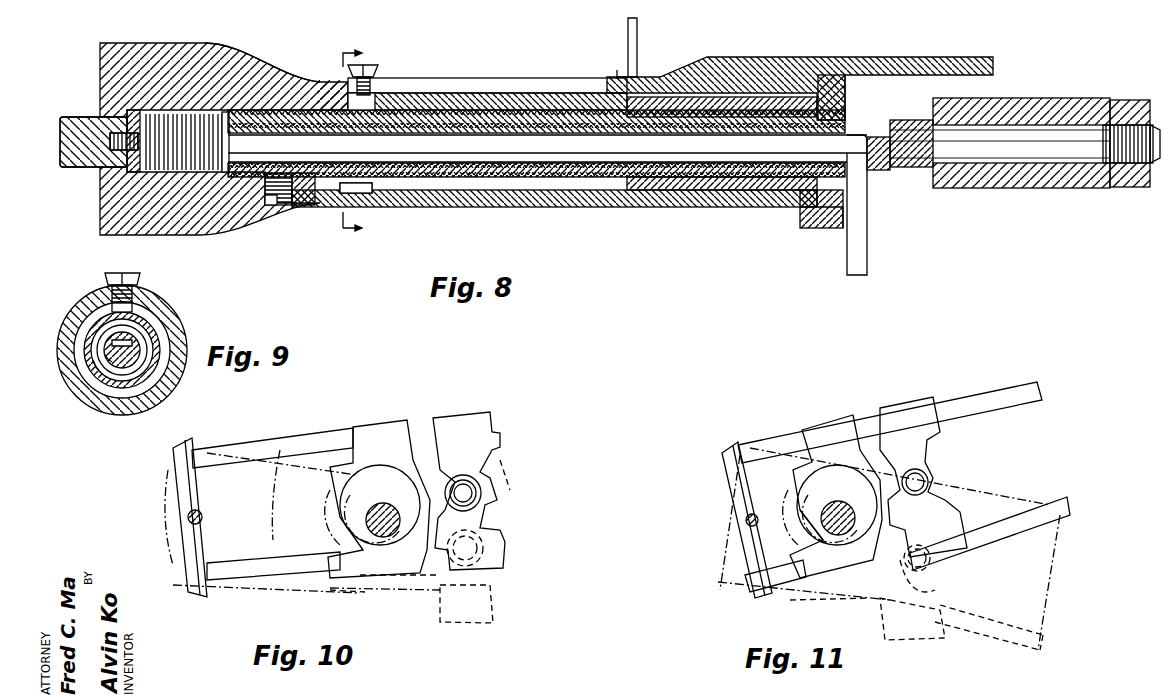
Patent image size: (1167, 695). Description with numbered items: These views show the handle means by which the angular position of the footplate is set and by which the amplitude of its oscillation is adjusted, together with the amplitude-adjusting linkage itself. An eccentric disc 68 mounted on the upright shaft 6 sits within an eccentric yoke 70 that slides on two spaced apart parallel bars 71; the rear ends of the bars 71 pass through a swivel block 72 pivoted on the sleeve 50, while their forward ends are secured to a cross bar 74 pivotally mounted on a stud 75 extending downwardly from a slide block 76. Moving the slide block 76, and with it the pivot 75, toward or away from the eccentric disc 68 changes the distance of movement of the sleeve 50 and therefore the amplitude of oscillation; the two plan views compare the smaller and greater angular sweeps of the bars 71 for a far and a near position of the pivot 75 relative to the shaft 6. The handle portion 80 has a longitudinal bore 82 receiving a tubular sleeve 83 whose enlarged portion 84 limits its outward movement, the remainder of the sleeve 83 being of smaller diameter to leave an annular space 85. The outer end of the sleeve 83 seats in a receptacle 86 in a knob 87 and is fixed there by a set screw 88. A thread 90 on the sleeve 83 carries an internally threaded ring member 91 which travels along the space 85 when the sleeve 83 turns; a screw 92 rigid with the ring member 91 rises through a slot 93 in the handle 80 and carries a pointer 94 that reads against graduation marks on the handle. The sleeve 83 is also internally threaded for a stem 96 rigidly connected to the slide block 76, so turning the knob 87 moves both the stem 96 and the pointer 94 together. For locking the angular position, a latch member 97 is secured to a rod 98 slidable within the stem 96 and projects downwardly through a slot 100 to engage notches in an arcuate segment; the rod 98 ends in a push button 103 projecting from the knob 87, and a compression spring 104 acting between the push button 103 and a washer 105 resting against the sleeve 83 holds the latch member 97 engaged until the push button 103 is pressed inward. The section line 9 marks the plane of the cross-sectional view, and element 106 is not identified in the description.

In FIG. 10, the upright shaft 6 is at (395, 530).
In FIG. 11, the upright shaft 6 is at (840, 505).
In FIG. 8, the section line 9— 9 is at (343, 141).
In FIG. 10, the sleeve 50 is at (498, 535).
In FIG. 11, the sleeve 50 is at (925, 498).
In FIG. 10, the eccentric disc 68 is at (345, 488).
In FIG. 11, the eccentric disc 68 is at (800, 505).
In FIG. 10, the eccentric yoke 70 is at (372, 576).
In FIG. 11, the eccentric yoke 70 is at (812, 590).
In FIG. 10, the parallel rods or bars 71 is at (280, 452).
In FIG. 11, the parallel rods or bars 71 is at (1027, 403).
In FIG. 10, the swivel block 72 is at (495, 452).
In FIG. 11, the swivel block 72 is at (930, 595).
In FIG. 10, the cross bar 74 is at (170, 548).
In FIG. 11, the cross bar 74 is at (740, 493).
In FIG. 10, the stud 75 is at (202, 515).
In FIG. 11, the stud 75 is at (746, 522).
In FIG. 8, the slide block 76 is at (1045, 97).
In FIG. 8, the handle portion 80 is at (558, 203).
In FIG. 9, the handle portion 80 is at (73, 318).
In FIG. 8, the longitudinal bore 82 is at (410, 185).
In FIG. 8, the tubular sleeve 83 is at (618, 177).
In FIG. 9, the tubular sleeve 83 is at (100, 370).
In FIG. 8, the enlarged portion 84 is at (843, 212).
In FIG. 8, the annular space 85 is at (515, 187).
In FIG. 8, the receptacle 86 is at (303, 180).
In FIG. 8, the knob 87 is at (286, 88).
In FIG. 8, the set screw 88 is at (267, 208).
In FIG. 8, the thread 90 is at (373, 192).
In FIG. 8, the internally threaded ring member 91 is at (377, 96).
In FIG. 9, the internally threaded ring member 91 is at (170, 330).
In FIG. 8, the screw 92 is at (368, 66).
In FIG. 9, the screw 92 is at (108, 278).
In FIG. 8, the slot 93 is at (477, 78).
In FIG. 9, the slot 93 is at (142, 290).
In FIG. 9, the pointer 94 is at (138, 275).
In FIG. 8, the stem 96 is at (548, 123).
In FIG. 9, the stem 96 is at (135, 355).
In FIG. 8, the latch member 97 is at (857, 250).
In FIG. 8, the rod 98 is at (770, 143).
In FIG. 9, the rod 98 is at (132, 343).
In FIG. 8, the slot 100 is at (878, 160).
In FIG. 9, the slot 100 is at (120, 362).
In FIG. 8, the push button 103 is at (75, 103).
In FIG. 8, the compression spring 104 is at (167, 108).
In FIG. 8, the washer 105 is at (222, 108).
In FIG. 8, the index post 106 is at (638, 54).